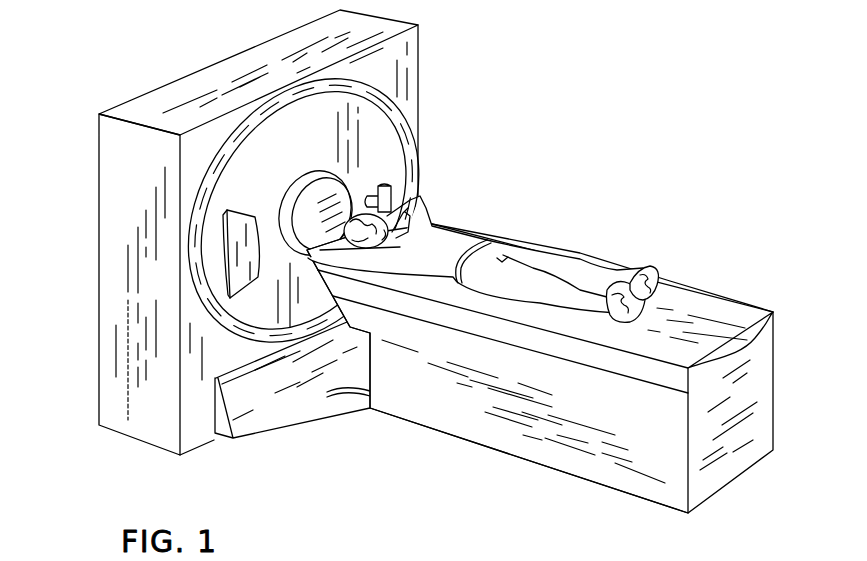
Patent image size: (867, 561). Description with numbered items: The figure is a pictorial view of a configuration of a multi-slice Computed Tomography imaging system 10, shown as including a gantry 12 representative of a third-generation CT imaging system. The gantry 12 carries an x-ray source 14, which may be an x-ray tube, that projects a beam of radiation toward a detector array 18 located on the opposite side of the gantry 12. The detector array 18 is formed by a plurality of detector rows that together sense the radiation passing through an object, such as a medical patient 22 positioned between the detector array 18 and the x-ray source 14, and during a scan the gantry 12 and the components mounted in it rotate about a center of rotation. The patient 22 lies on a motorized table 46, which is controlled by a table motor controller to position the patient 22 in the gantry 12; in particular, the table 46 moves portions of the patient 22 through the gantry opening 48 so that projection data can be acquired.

The CT imaging system 10 is at (341, 418).
The gantry 12 is at (253, 118).
The x-ray source 14 is at (386, 191).
The detector array 18 is at (240, 286).
The patient 22 is at (483, 240).
The motorized table 46 is at (448, 416).
The gantry opening 48 is at (348, 193).